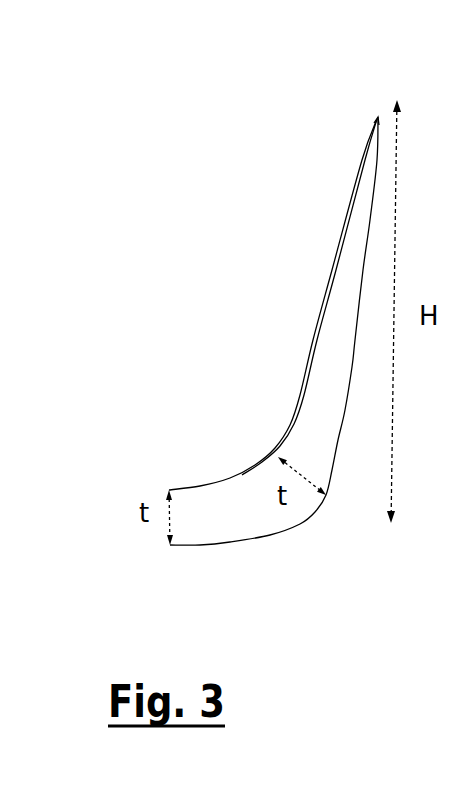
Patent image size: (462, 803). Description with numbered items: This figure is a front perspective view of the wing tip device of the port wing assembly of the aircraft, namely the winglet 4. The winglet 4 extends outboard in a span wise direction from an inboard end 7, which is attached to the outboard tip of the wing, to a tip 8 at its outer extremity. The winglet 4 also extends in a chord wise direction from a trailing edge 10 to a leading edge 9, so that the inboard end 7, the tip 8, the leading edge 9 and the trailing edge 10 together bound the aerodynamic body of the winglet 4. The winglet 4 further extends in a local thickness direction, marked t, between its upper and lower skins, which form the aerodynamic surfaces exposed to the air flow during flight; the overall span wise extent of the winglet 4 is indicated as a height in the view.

The winglet 4 is at (290, 292).
The inboard end 7 is at (166, 480).
The tip 8 is at (378, 117).
The leading edge 9 is at (352, 367).
The trailing edge 10 is at (310, 305).